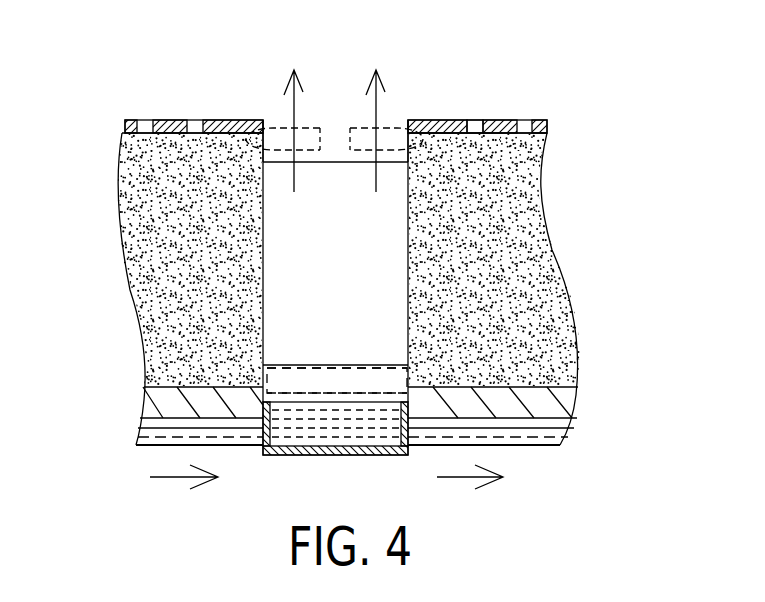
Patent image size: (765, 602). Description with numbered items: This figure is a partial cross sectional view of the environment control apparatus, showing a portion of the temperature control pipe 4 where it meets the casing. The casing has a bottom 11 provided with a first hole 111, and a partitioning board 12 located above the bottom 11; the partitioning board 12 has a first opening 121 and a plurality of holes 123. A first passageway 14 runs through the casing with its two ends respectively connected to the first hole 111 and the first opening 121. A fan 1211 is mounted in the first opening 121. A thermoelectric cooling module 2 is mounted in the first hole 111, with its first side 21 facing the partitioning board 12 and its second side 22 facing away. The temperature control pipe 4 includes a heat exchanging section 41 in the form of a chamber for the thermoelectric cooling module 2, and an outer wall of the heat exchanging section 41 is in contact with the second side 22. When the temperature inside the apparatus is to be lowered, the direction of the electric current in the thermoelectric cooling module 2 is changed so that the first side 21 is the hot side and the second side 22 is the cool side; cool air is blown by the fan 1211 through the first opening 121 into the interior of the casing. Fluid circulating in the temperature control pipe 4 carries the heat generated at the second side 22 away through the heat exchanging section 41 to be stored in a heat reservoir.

The bottom 11 is at (553, 405).
The first hole 111 is at (407, 365).
The partitioning board 12 is at (427, 120).
The first opening 121 is at (273, 119).
The fan 1211 is at (315, 123).
The hole 123 is at (473, 122).
The first passageway 14 is at (270, 233).
The thermoelectric cooling module 2 is at (263, 398).
The first side 21 is at (288, 366).
The second side 22 is at (288, 394).
The temperature control pipe 4 is at (535, 437).
The heat exchanging section 41 is at (317, 430).